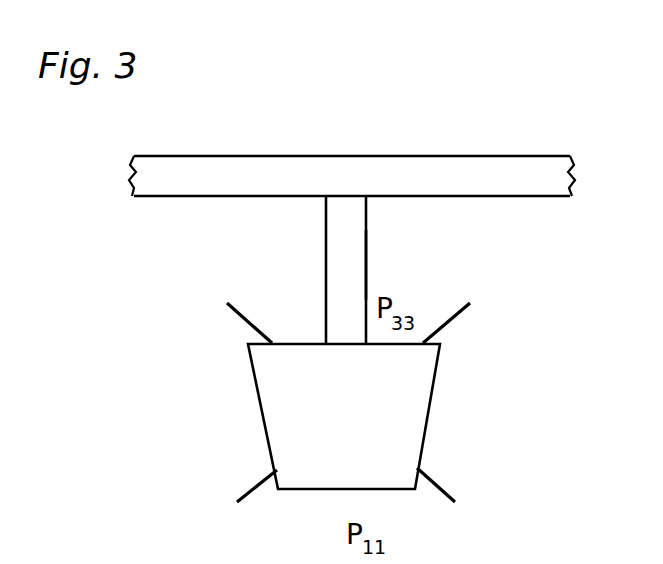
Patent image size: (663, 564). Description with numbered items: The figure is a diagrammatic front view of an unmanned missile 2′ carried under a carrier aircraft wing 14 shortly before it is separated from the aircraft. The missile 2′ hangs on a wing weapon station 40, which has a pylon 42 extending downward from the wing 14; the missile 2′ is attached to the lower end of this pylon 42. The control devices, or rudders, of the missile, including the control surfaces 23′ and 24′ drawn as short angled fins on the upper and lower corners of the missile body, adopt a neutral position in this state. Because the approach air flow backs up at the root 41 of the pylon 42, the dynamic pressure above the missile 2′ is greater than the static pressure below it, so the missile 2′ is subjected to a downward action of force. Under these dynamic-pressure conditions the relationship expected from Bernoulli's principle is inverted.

The carrier aircraft wing 14 is at (366, 156).
The wing weapon station 40 is at (298, 243).
The pylon root 41 is at (342, 322).
The pylon 42 is at (367, 262).
The unmanned missile 2′ is at (430, 402).
The missile control surface 23′ is at (455, 312).
The missile control surface 24′ is at (450, 487).